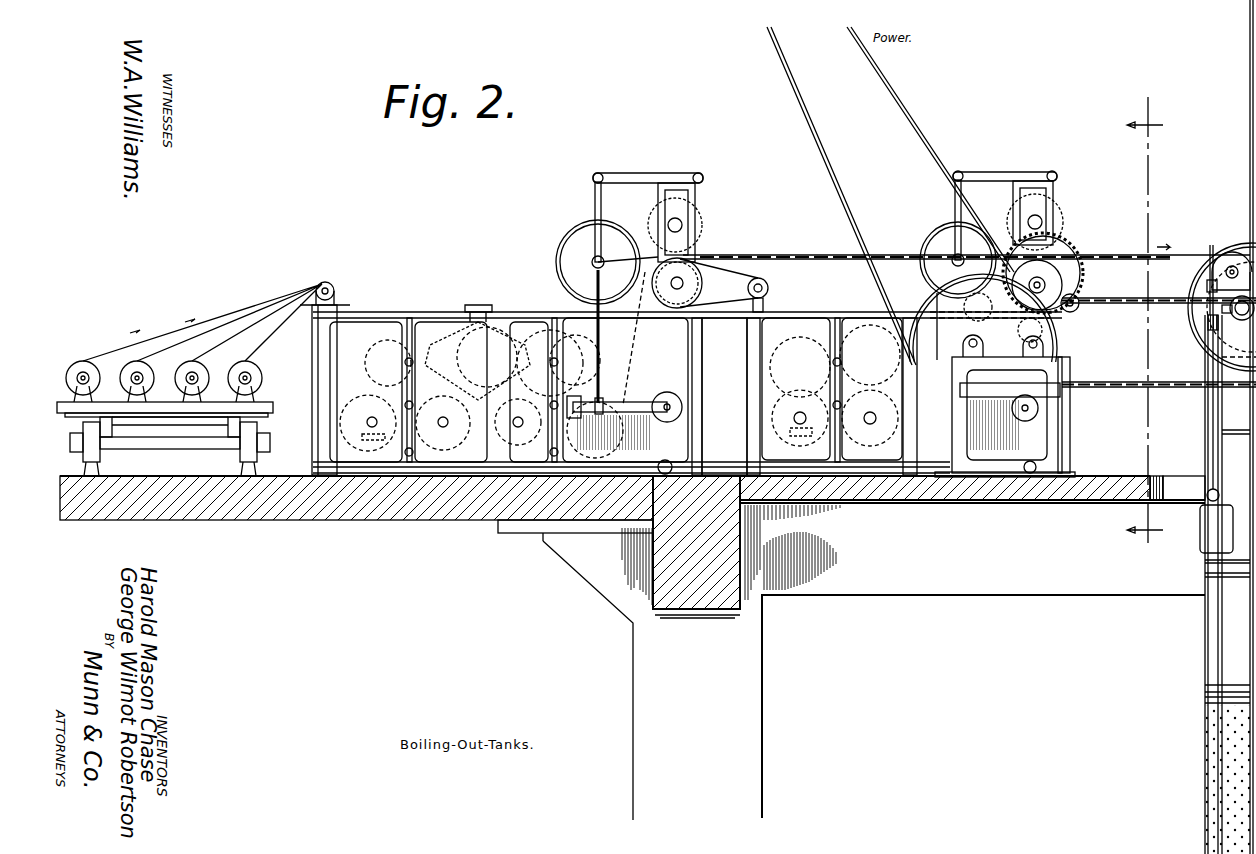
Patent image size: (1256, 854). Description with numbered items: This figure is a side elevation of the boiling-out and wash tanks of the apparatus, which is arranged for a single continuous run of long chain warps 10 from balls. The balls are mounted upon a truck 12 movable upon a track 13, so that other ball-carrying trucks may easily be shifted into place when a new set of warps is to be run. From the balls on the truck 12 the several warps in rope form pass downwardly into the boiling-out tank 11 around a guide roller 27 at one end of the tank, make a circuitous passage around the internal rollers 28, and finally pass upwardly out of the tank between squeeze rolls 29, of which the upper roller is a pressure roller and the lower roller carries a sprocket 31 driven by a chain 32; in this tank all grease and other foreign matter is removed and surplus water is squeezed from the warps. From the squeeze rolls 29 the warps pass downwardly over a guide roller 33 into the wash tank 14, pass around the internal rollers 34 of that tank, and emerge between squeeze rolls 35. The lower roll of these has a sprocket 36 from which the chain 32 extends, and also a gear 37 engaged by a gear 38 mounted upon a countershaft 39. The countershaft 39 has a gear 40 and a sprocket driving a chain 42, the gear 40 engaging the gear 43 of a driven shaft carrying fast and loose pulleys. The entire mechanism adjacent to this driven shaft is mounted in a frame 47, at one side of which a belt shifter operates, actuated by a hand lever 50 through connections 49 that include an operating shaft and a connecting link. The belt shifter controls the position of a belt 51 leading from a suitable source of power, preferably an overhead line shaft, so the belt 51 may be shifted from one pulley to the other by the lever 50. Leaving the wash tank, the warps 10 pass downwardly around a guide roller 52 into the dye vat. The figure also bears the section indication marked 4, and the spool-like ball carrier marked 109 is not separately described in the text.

The section line 4- 4 is at (1141, 324).
The long chain warps 10 is at (200, 320).
The boiling-out tank 11 is at (258, 447).
The truck 12 is at (268, 403).
The track 13 is at (90, 476).
The wash tank 14 is at (762, 450).
The guide roller 27 is at (334, 290).
The internal rollers 28 is at (370, 392).
The squeeze rolls 29 is at (700, 262).
The sprocket 31 is at (703, 290).
The chain 32 is at (796, 256).
The guide roller 33 is at (769, 288).
The internal rollers 34 is at (796, 389).
The squeeze rolls 35 is at (1058, 222).
The sprocket 36 is at (1070, 286).
The gear 37 is at (1078, 308).
The gear 38 is at (1007, 415).
The countershaft 39 is at (1060, 352).
The gear 40 is at (870, 409).
The chain 42 is at (1180, 303).
The gear 43 is at (930, 300).
The frame 47 is at (1070, 440).
The connections 49 is at (1068, 384).
The hand lever 50 is at (870, 352).
The belt 51 is at (922, 130).
The guide roller 52 is at (1233, 264).
The spool 109 is at (200, 368).